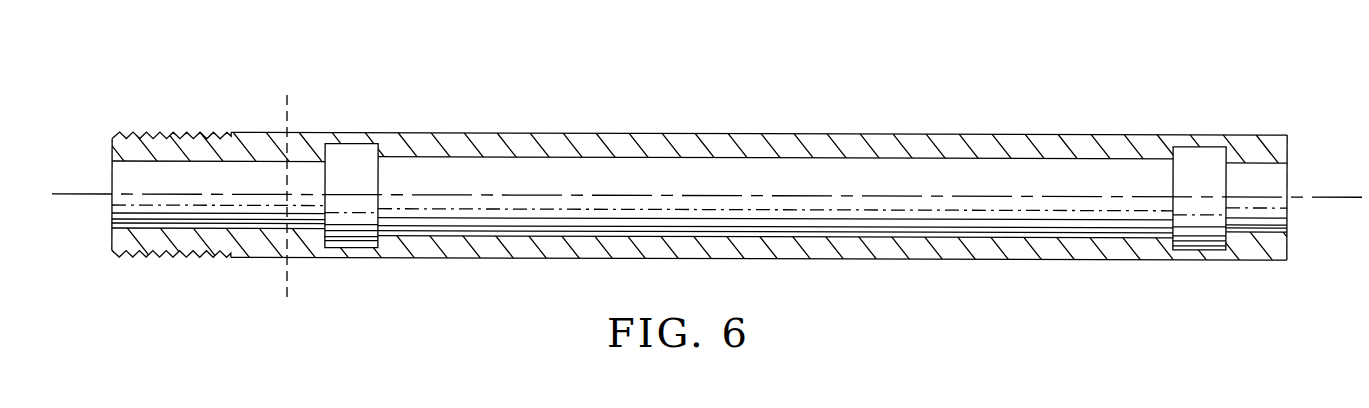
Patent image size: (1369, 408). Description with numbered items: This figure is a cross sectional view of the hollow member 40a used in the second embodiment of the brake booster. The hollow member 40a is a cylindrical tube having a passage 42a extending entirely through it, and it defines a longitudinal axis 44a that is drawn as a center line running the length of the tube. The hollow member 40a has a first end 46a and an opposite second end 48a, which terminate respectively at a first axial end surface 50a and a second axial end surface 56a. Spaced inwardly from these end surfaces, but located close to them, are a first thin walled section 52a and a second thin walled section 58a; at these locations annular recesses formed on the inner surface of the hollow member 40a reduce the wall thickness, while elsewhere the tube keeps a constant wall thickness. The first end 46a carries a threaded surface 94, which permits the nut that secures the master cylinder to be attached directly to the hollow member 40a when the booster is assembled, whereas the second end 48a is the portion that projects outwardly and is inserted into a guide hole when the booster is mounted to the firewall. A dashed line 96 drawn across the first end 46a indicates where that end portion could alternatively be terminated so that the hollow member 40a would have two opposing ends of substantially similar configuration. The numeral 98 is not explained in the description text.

The hollow member 40a is at (847, 138).
The passage 42a is at (627, 172).
The longitudinal axis 44a is at (78, 193).
The first end 46a is at (299, 117).
The second end 48a is at (1234, 126).
The first axial end surface 50a is at (99, 139).
The first thin walled section 52a is at (342, 262).
The second axial end surface 56a is at (1289, 153).
The second thin walled section 58a is at (1190, 255).
The threaded surface 94 is at (180, 257).
The dashed line 96 is at (285, 268).
The end wall 98 is at (1255, 253).